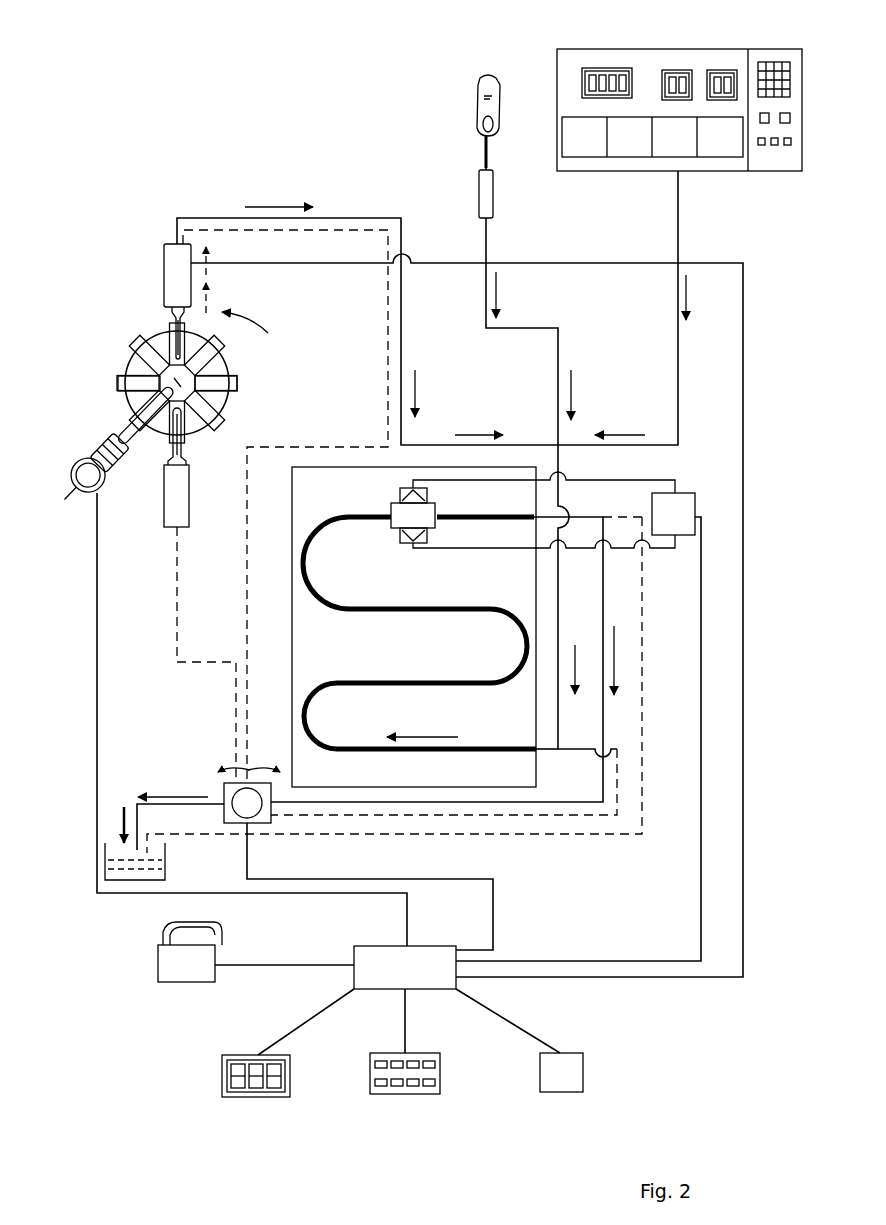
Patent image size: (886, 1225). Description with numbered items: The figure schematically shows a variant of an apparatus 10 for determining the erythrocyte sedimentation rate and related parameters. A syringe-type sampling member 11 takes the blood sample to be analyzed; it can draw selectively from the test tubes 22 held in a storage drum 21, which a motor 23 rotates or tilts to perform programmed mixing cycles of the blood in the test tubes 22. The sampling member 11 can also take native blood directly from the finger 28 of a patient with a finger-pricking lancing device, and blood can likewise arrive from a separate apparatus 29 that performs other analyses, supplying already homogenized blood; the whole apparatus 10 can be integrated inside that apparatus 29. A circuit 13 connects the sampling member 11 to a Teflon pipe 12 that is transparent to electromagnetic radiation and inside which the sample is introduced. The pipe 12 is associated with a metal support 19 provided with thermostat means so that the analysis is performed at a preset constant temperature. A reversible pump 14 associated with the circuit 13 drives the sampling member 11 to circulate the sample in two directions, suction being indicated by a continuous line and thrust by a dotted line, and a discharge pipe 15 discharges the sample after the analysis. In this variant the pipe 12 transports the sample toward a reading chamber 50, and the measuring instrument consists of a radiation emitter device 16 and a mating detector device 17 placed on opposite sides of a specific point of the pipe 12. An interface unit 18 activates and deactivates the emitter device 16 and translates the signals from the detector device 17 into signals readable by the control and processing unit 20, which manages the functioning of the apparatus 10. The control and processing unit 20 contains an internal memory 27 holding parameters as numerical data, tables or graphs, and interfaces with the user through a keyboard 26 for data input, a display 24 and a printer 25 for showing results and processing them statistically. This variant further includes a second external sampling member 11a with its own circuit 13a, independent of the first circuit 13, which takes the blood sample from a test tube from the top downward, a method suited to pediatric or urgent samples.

The apparatus 10 is at (247, 168).
The sampling member 11 is at (176, 277).
The second external sampling member 11a is at (178, 511).
The pipe 12 is at (388, 613).
The circuit 13 is at (372, 372).
The circuit 13a is at (170, 616).
The pump 14 is at (229, 788).
The discharge pipe 15 is at (130, 800).
The radiation emitter device 16 is at (402, 539).
The detector device 17 is at (404, 491).
The interface unit 18 is at (680, 507).
The metal support 19 is at (300, 637).
The control and processing unit 20 is at (351, 941).
The storage drum 21 is at (195, 424).
The test tubes 22 is at (120, 383).
The motor 23 is at (119, 469).
The display 24 is at (255, 1093).
The printer 25 is at (189, 967).
The keyboard 26 is at (393, 1095).
The internal memory 27 is at (563, 1082).
The finger 28 is at (488, 84).
The apparatus 29 is at (584, 60).
The reading chamber 50 is at (444, 494).